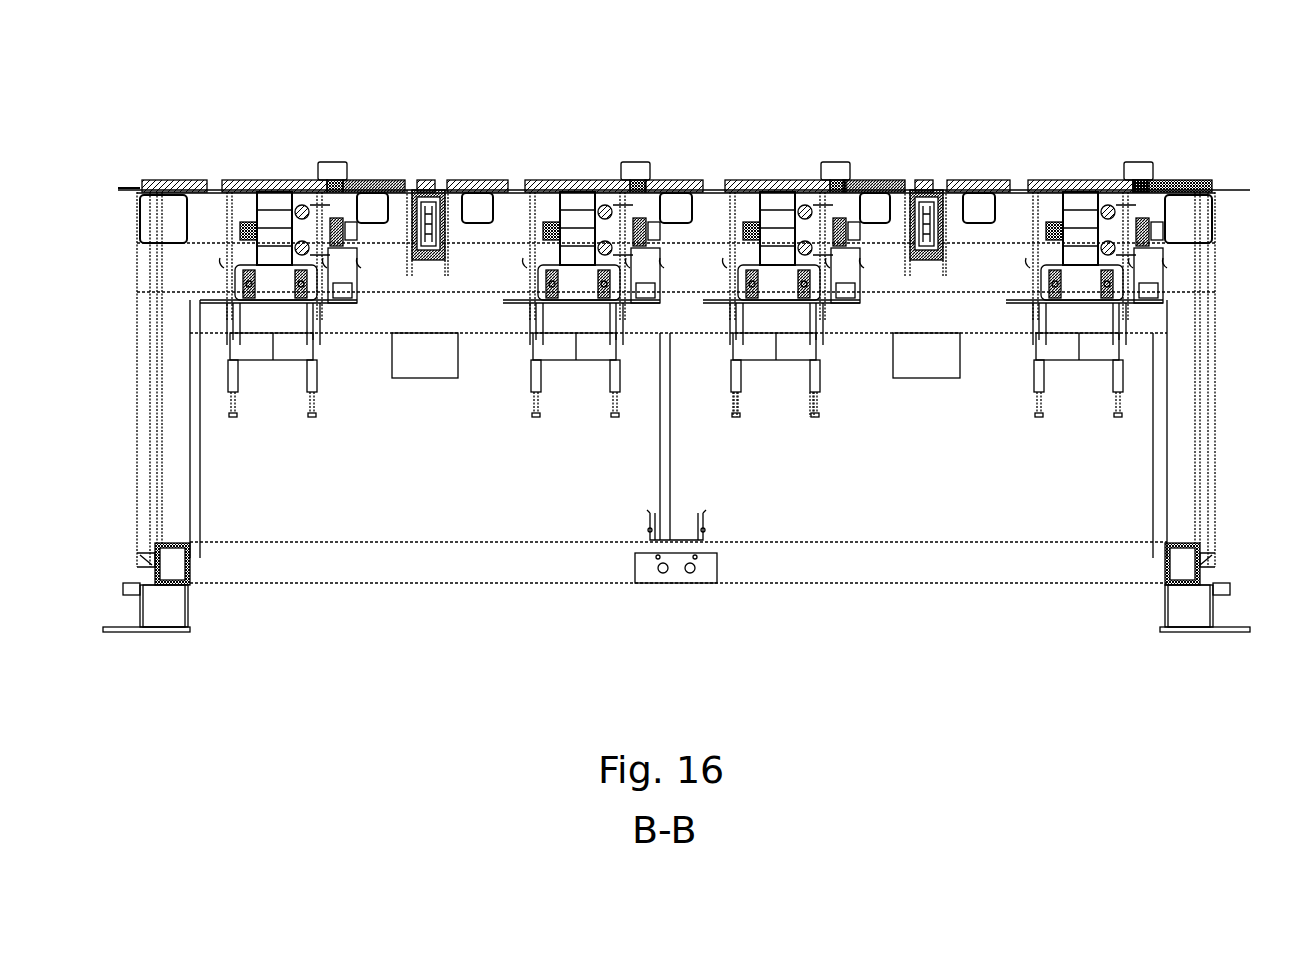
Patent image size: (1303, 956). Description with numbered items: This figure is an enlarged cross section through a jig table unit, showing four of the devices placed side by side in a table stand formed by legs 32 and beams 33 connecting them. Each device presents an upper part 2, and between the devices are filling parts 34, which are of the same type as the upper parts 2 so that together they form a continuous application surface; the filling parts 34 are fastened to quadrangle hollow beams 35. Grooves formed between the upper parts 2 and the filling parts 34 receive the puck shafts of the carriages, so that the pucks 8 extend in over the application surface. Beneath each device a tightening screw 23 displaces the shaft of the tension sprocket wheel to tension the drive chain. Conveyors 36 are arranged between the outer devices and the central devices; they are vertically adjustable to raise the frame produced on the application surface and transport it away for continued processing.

The upper part 2 is at (267, 180).
The support 8 is at (330, 170).
The tightening screw 23 is at (736, 405).
The legs 32 is at (175, 478).
The beams 33 is at (342, 555).
The filling parts 34 is at (166, 180).
The quadrangle hollow beams 35 is at (143, 213).
The conveyors 36 is at (432, 178).